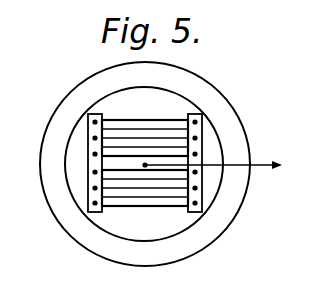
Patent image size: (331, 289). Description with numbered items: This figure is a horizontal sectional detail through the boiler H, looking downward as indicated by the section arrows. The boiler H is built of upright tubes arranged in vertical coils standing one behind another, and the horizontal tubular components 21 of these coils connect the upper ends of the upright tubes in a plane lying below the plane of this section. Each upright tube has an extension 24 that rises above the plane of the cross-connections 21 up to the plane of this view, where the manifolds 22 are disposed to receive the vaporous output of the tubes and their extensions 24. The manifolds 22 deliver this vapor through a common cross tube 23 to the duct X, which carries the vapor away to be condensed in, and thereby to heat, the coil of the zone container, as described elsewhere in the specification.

The boiler H is at (148, 105).
The horizontal tubular components 21 is at (158, 140).
The manifolds 22 is at (93, 163).
The common cross tube 23 is at (120, 165).
The extension 24 is at (198, 140).
The duct X is at (225, 169).